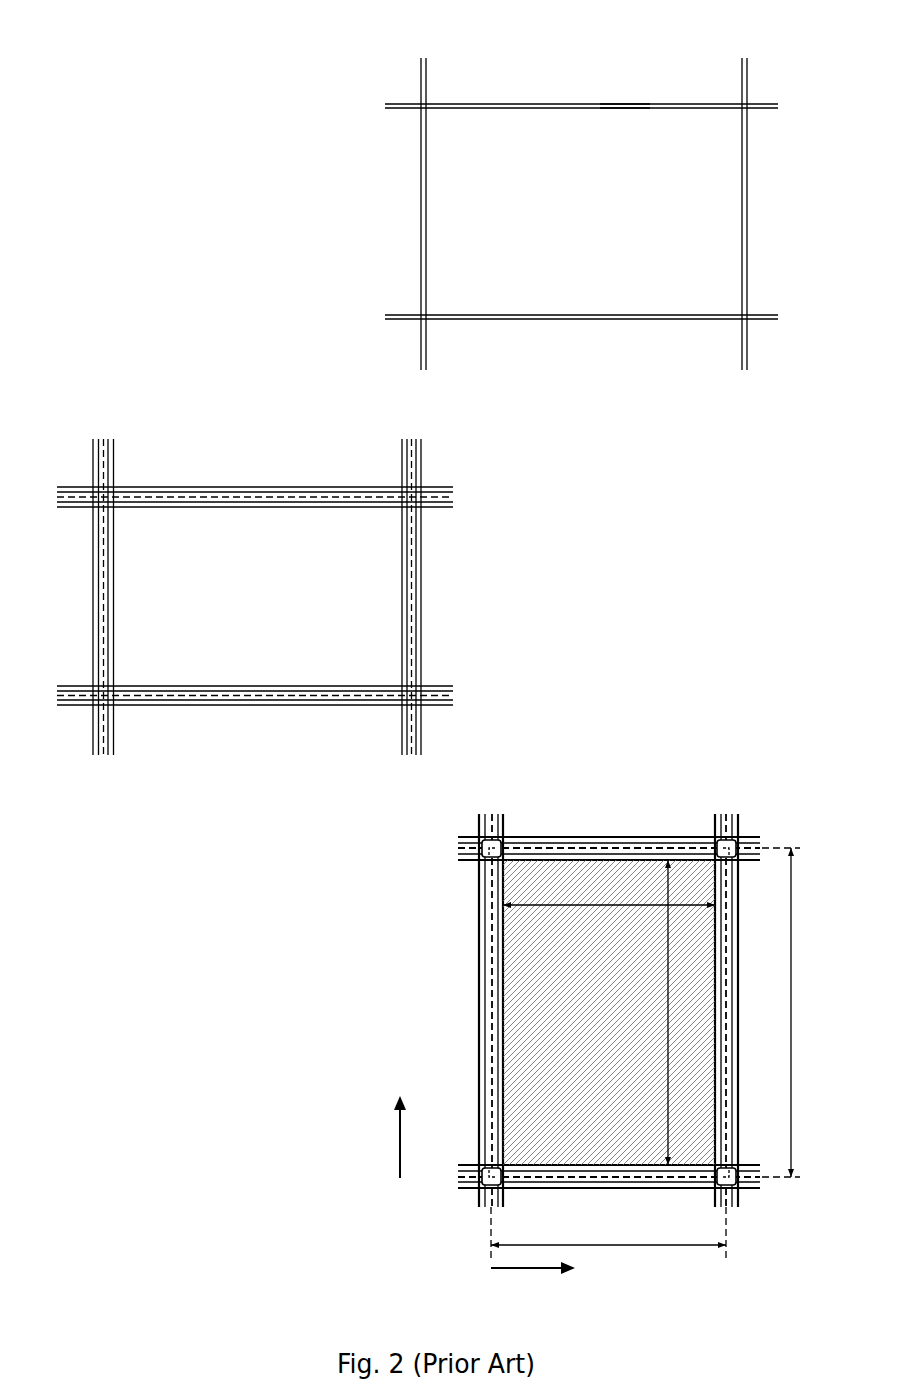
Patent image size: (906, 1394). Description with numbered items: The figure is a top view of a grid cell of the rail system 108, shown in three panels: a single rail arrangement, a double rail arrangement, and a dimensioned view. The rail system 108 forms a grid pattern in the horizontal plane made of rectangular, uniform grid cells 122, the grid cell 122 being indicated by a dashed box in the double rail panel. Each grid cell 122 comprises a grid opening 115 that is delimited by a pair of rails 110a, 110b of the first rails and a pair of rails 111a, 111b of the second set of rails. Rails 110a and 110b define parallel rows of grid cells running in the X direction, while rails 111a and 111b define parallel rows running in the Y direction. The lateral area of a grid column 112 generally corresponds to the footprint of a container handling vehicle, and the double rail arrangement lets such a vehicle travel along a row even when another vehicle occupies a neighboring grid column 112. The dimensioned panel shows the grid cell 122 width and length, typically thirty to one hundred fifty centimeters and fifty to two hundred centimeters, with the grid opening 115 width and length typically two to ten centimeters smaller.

The rail system 108 is at (506, 76).
The rail 110a is at (501, 110).
The rail 110b is at (615, 312).
The rail 111a is at (427, 252).
The rail 111b is at (742, 173).
The grid column 112 is at (627, 105).
The grid opening 115 is at (600, 221).
The grid cell 122 is at (226, 486).